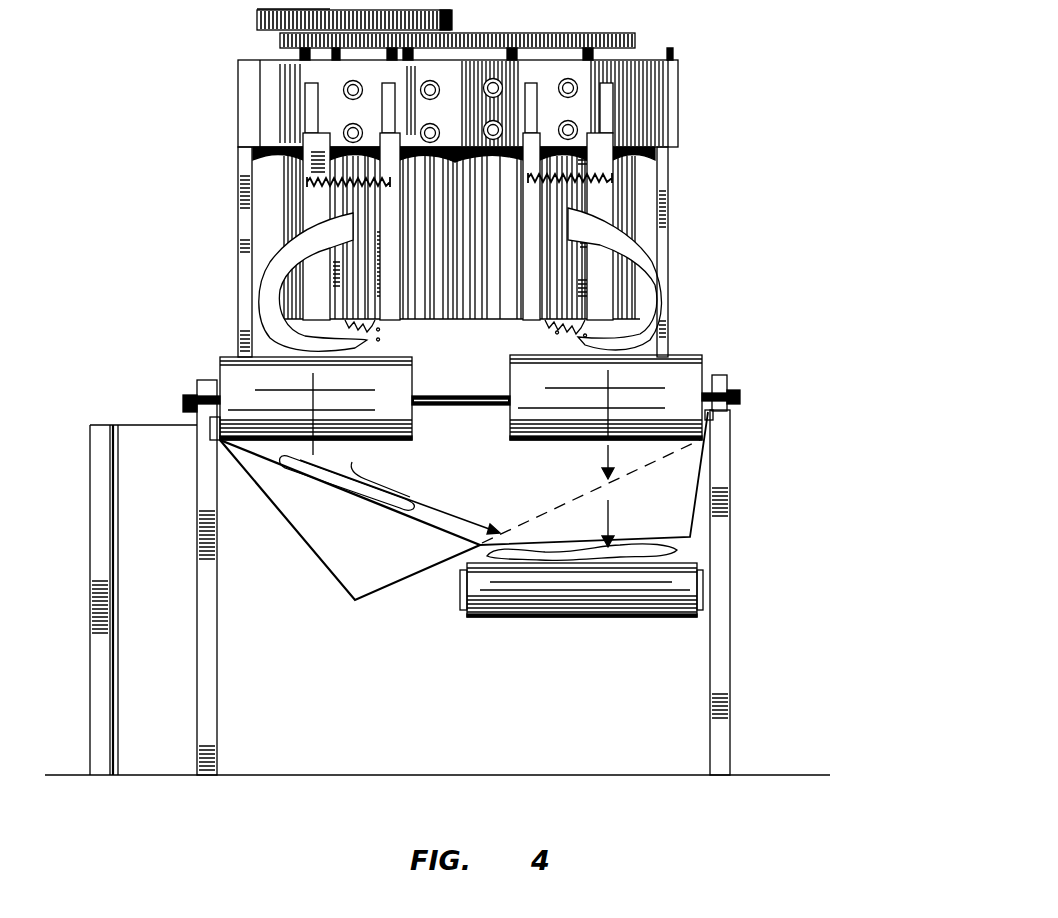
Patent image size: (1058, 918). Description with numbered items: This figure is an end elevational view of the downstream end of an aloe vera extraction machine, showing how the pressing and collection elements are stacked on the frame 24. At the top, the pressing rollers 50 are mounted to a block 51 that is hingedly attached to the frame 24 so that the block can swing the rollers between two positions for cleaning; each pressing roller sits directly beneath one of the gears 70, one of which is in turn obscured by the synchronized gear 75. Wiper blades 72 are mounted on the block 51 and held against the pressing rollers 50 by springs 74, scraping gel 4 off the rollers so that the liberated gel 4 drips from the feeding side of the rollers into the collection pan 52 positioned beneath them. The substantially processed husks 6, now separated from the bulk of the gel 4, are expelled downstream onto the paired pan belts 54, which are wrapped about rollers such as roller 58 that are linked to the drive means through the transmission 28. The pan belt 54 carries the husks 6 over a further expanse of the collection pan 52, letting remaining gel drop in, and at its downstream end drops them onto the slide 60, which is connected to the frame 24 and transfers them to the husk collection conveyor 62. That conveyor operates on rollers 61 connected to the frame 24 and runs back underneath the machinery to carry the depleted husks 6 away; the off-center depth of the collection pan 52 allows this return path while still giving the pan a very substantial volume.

The gel 4 is at (377, 323).
The husks 6 is at (277, 265).
The frame 24 is at (668, 210).
The transmission 28 is at (446, 28).
The pressing rollers 50 is at (290, 222).
The block 51 is at (660, 87).
The collection pan 52 is at (320, 565).
The pan belt 54 is at (213, 357).
The roller 58 is at (416, 427).
The slide 60 is at (675, 499).
The rollers 61 is at (700, 590).
The husk collection conveyor 62 is at (595, 605).
The gears 70 is at (283, 40).
The wiper blades 72 is at (317, 168).
The springs 74 is at (320, 186).
The synchronized gear 75 is at (330, 10).